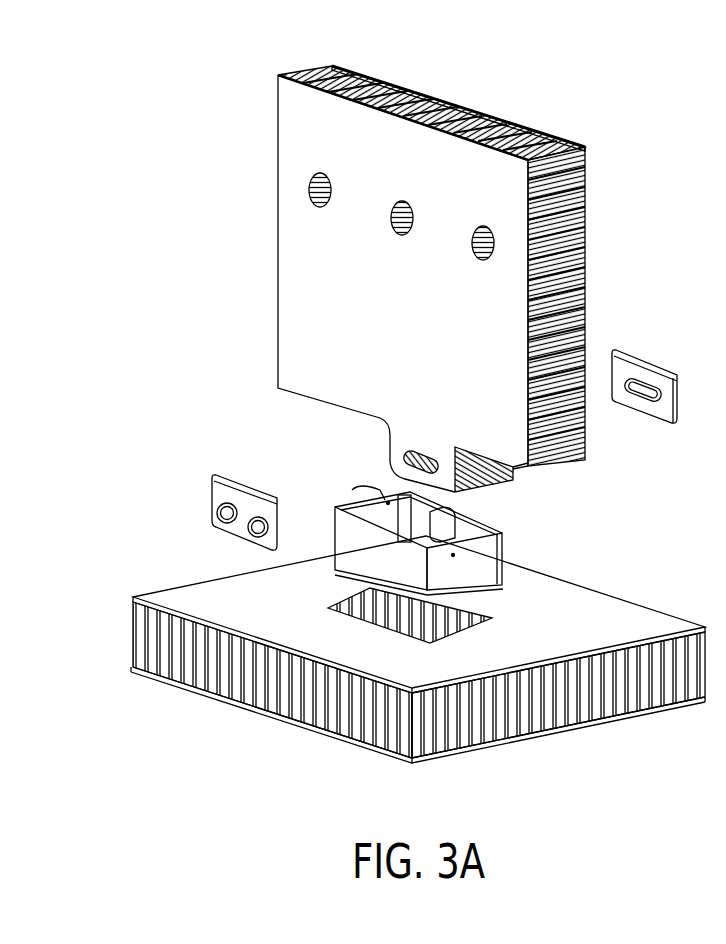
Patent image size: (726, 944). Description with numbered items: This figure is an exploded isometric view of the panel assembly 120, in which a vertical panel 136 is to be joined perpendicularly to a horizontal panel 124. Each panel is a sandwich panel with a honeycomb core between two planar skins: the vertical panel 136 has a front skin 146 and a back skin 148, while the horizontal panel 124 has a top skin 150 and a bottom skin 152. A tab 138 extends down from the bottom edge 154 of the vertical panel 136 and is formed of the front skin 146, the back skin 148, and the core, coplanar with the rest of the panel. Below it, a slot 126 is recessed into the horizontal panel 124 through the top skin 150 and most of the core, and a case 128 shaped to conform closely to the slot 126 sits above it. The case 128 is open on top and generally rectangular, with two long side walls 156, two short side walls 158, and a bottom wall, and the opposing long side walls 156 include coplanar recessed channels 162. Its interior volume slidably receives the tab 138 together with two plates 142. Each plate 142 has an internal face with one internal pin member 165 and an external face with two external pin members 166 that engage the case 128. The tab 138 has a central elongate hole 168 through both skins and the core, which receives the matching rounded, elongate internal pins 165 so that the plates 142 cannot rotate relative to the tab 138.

The panel assembly 120 is at (135, 130).
The horizontal panel 124 is at (672, 620).
The slot 126 is at (447, 627).
The case 128 is at (535, 546).
The vertical panel 136 is at (550, 138).
The tab 138 is at (387, 445).
The plates 142 is at (222, 478).
The front skin 146 is at (282, 123).
The back skin 148 is at (442, 99).
The top skin 150 is at (160, 595).
The bottom skin 152 is at (133, 668).
The bottom edge 154 is at (298, 405).
The long side walls 156 is at (367, 545).
The short side walls 158 is at (470, 568).
The recessed channels 162 is at (450, 510).
The internal pin member 165 is at (641, 395).
The external pin members 166 is at (223, 511).
The hole 168 is at (428, 452).